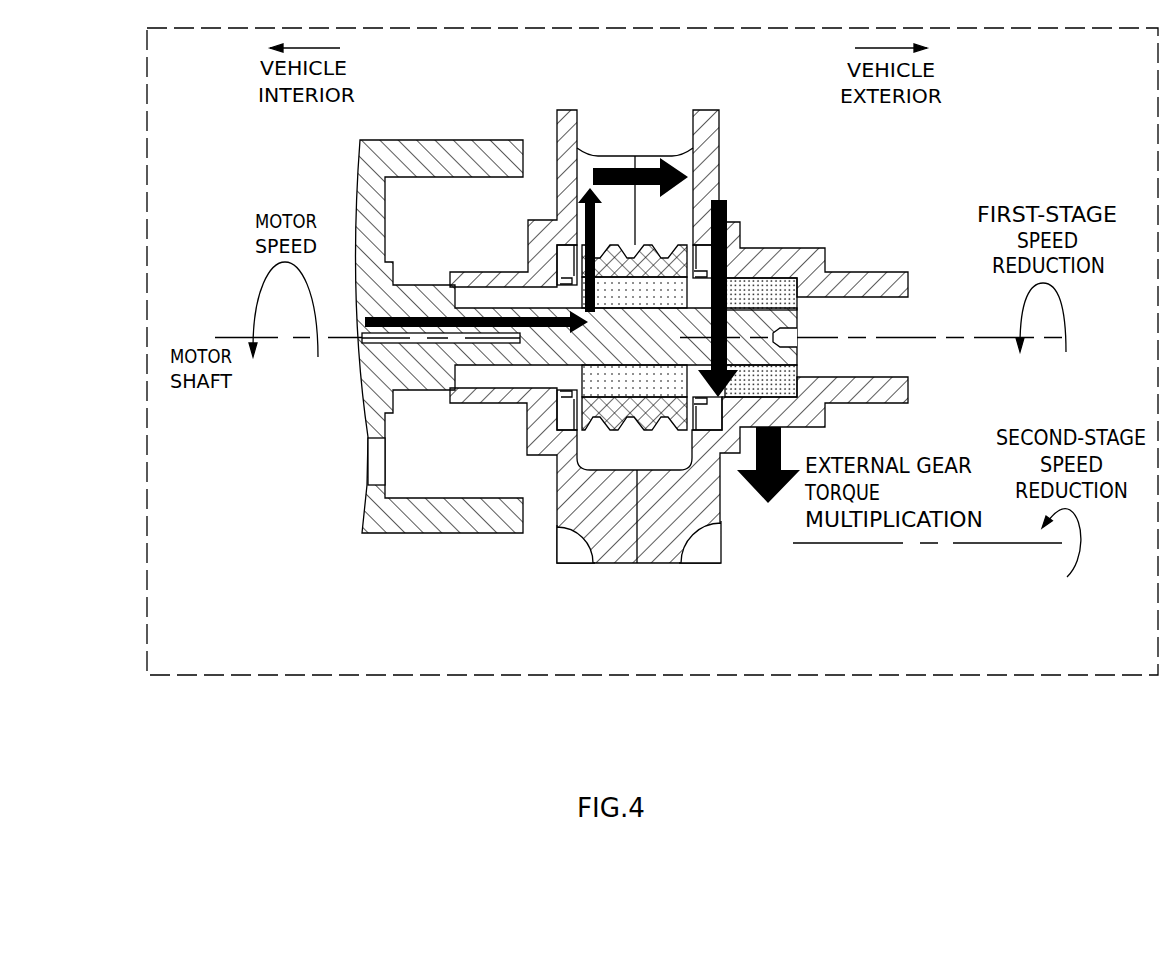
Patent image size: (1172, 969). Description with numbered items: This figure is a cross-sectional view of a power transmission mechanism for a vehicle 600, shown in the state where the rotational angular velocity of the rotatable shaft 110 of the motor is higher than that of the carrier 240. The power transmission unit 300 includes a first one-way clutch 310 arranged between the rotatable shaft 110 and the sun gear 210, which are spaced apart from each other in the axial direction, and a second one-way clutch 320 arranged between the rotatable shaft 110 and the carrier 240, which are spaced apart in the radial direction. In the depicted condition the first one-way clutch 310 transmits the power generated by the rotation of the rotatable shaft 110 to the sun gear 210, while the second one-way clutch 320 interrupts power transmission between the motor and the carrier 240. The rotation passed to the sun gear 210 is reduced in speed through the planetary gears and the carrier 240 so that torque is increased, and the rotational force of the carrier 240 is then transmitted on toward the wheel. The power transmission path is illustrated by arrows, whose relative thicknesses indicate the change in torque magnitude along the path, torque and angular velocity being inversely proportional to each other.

The rotatable shaft 110 is at (380, 372).
The sun gear 210 is at (627, 423).
The carrier 240 is at (719, 143).
The power transmission unit 300 is at (689, 473).
The first one-way clutch 310 is at (660, 390).
The second one-way clutch 320 is at (748, 386).
The vehicle 600 is at (275, 675).